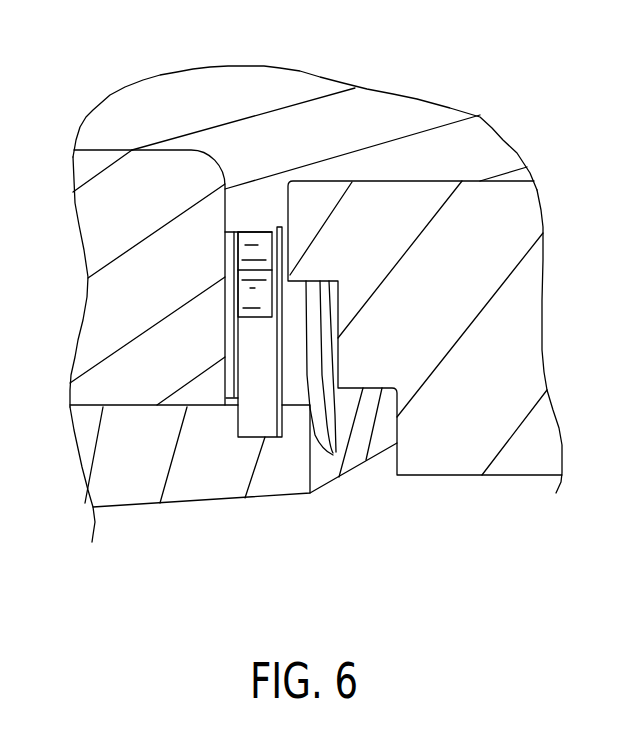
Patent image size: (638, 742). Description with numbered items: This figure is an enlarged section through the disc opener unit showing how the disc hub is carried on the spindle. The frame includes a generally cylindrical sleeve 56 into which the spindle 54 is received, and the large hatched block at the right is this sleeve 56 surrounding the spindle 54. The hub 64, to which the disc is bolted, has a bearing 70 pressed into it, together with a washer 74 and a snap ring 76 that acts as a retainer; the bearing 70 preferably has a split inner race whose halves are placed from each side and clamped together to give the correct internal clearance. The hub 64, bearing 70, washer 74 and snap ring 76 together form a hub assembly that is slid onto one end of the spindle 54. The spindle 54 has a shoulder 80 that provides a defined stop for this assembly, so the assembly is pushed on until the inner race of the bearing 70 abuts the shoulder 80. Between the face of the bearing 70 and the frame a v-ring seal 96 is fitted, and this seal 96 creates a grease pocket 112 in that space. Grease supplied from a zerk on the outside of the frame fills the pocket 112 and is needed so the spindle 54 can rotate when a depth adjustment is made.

The spindle 54 is at (381, 105).
The sleeve 56 is at (519, 208).
The hub 64 is at (192, 485).
The bearing 70 is at (98, 233).
The washer 74 is at (228, 343).
The snap ring 76 is at (259, 238).
The shoulder 80 is at (238, 212).
The v-ring seal 96 is at (357, 458).
The grease pocket 112 is at (295, 375).